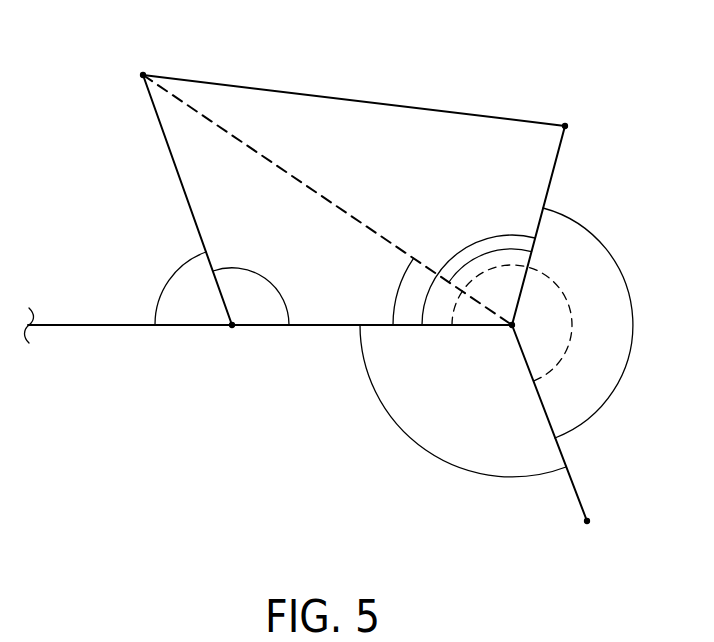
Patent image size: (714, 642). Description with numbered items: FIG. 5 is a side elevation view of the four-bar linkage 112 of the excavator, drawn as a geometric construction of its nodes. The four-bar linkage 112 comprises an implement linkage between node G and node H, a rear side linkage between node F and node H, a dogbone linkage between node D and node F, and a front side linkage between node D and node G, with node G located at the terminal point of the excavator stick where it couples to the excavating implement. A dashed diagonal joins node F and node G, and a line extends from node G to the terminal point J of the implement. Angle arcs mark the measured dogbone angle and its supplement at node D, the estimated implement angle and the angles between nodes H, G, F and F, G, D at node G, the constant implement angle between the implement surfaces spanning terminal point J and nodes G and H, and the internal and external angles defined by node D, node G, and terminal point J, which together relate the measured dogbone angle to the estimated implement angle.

The four-bar linkage 112 is at (352, 260).
The node F is at (137, 75).
The node H is at (579, 115).
The node D is at (235, 338).
The node G is at (525, 326).
The terminal point J is at (591, 536).